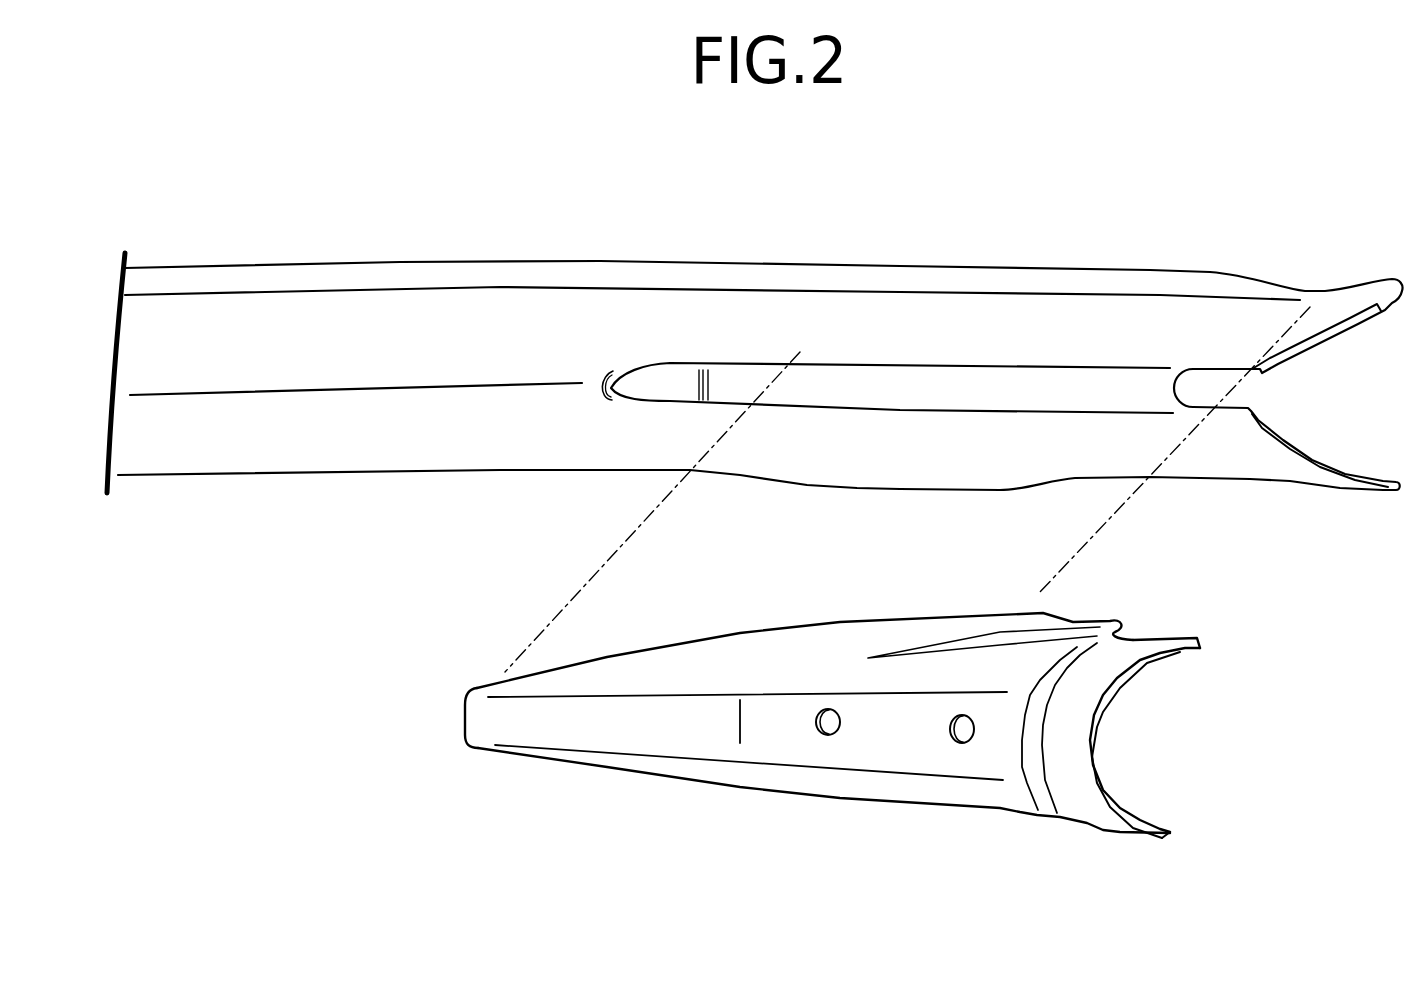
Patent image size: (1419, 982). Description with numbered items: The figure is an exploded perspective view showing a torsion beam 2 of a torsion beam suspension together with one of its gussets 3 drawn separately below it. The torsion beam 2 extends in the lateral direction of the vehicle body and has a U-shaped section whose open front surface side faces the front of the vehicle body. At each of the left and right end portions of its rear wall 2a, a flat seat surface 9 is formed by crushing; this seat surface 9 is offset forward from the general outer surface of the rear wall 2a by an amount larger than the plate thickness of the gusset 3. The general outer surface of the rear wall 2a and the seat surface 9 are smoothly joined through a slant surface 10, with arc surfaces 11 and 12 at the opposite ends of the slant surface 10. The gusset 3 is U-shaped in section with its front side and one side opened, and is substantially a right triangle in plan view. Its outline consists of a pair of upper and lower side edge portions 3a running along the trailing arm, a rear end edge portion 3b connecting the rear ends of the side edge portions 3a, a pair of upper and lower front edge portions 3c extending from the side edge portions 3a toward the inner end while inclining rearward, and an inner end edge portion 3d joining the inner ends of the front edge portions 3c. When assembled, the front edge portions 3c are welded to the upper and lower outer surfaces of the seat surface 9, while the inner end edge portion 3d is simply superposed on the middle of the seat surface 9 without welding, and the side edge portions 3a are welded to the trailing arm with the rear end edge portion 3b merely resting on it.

The torsion beam 2 is at (369, 312).
The rear wall 2a is at (377, 390).
The gusset 3 is at (638, 730).
The side edge portion 3a is at (1137, 638).
The rear end edge portion 3b is at (1094, 740).
The front edge portion 3c is at (745, 635).
The inner end edge portion 3d is at (463, 723).
The seat surface 9 is at (917, 390).
The slant surface 10 is at (660, 380).
The arc surface 11 is at (597, 378).
The arc surface 12 is at (710, 383).